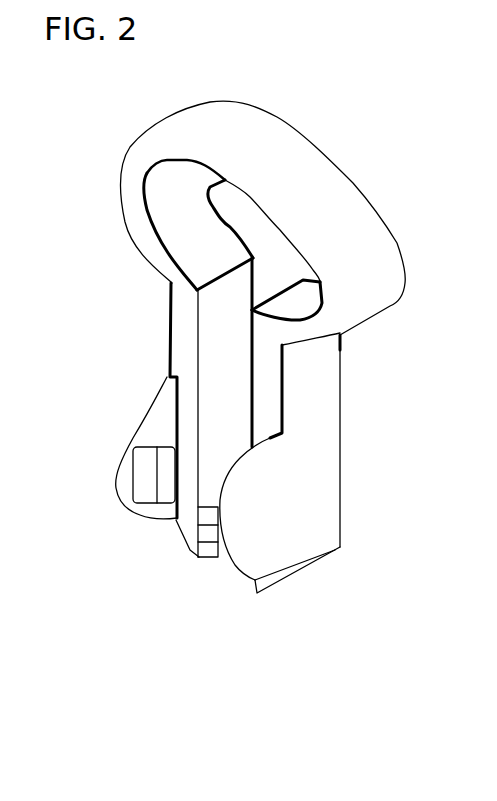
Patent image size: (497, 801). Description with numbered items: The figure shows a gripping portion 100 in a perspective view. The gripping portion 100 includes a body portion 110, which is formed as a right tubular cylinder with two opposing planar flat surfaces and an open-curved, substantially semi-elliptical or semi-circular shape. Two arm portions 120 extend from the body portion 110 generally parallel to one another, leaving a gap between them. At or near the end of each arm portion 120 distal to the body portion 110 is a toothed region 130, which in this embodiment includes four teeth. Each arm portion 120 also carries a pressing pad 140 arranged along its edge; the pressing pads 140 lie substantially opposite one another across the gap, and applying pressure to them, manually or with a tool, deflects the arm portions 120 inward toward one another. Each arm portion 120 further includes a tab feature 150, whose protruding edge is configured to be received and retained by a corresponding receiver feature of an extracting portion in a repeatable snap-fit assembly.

The gripping portion 100 is at (386, 93).
The body portion 110 is at (338, 190).
The arm portions 120 is at (186, 342).
The toothed region 130 is at (207, 530).
The pressing pad 140 is at (143, 420).
The tab feature 150 is at (143, 480).